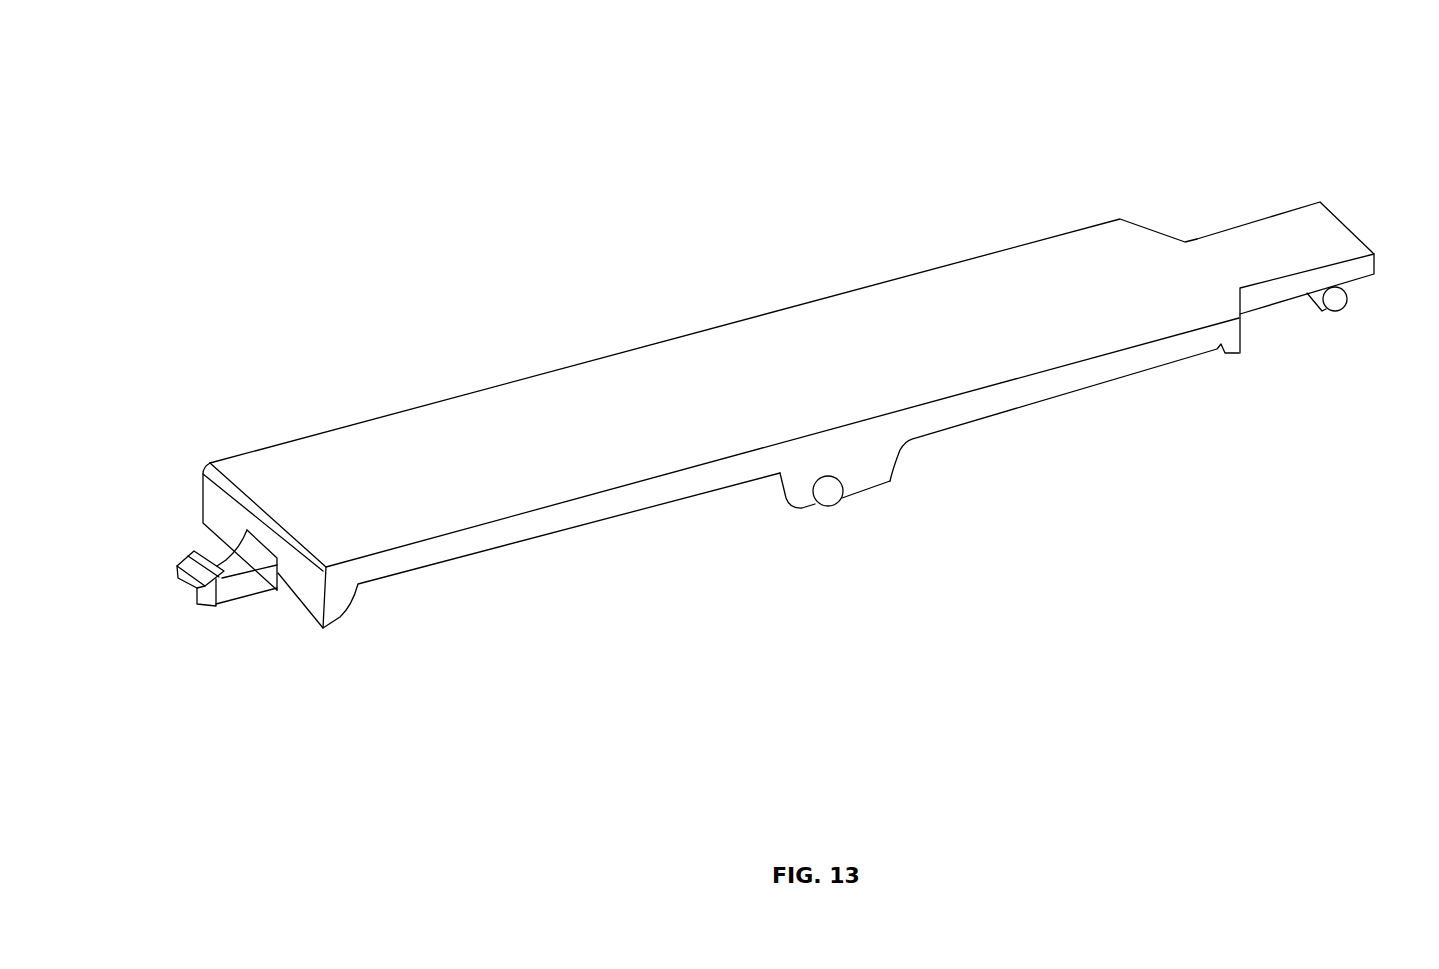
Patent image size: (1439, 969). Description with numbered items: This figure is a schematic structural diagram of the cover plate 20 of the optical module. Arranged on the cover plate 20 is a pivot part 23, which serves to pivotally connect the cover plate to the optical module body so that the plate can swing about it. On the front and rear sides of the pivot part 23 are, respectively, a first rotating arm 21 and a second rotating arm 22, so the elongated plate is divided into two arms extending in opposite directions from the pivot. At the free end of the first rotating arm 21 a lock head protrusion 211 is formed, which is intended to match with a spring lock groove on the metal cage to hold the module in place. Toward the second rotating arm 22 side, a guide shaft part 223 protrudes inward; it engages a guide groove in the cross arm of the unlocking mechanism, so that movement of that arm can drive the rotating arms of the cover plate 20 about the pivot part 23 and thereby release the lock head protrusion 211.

The cover plate 20 is at (163, 64).
The first rotating arm 21 is at (390, 495).
The lock head protrusion 211 is at (195, 574).
The second rotating arm 22 is at (1290, 247).
The pivot part 23 is at (833, 498).
The guide shaft part 223 is at (1338, 307).